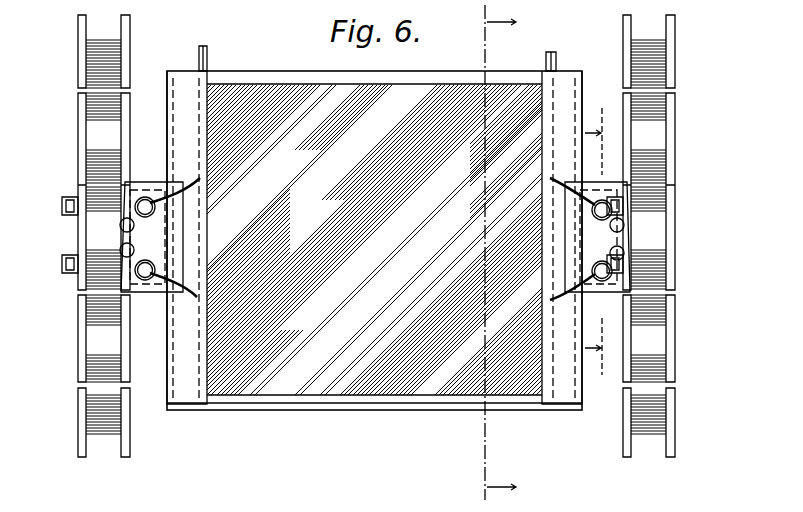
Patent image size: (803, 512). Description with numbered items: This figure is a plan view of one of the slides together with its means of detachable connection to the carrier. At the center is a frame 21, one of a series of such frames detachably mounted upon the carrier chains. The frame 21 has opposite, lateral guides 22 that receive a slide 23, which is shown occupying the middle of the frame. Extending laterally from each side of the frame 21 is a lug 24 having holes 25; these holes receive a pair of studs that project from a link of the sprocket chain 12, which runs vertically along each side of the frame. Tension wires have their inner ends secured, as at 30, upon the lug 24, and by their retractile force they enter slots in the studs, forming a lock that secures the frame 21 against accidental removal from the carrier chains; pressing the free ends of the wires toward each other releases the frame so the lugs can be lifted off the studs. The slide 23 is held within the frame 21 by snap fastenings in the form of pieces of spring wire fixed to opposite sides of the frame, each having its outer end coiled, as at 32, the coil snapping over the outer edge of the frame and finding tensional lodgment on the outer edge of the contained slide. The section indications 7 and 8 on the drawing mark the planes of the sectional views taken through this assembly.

The section line 7- 7 is at (509, 253).
The dimension / section indicator 8 is at (601, 241).
The sprocket chain 12 is at (78, 133).
The frame 21 is at (340, 405).
The lateral guides 22 is at (190, 385).
The slide 23 is at (374, 240).
The lug 24 is at (612, 292).
The holes 25 is at (601, 240).
The securing point of tension wires 30 is at (623, 253).
The coil 32 is at (207, 52).